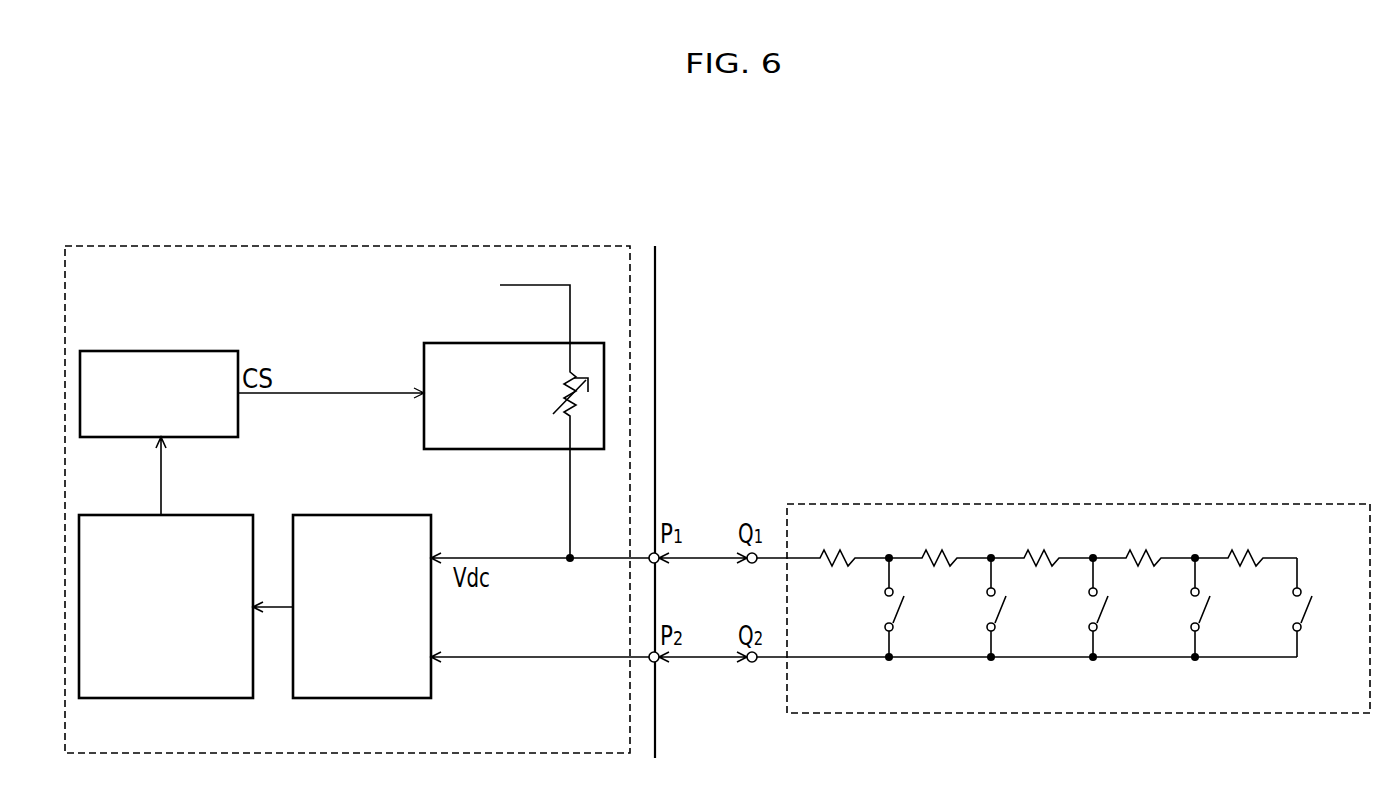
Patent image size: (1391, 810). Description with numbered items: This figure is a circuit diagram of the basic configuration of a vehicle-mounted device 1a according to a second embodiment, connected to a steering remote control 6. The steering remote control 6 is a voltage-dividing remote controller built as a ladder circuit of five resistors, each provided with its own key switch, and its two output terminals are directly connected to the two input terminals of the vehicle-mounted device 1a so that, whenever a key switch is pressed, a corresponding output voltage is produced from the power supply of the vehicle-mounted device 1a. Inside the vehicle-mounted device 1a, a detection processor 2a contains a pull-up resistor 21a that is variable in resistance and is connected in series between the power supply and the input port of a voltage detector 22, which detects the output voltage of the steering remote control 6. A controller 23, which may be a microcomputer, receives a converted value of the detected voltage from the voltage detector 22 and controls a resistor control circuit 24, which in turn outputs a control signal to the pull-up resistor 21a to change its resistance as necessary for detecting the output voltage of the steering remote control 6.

The detection processor 2a is at (322, 246).
The resistor control circuit 24 is at (172, 351).
The pull-up resistor 21a is at (424, 370).
The vehicle-mounted device 1a is at (656, 307).
The controller 23 is at (200, 515).
The voltage detector 22 is at (370, 515).
The steering remote control 6 is at (1078, 504).